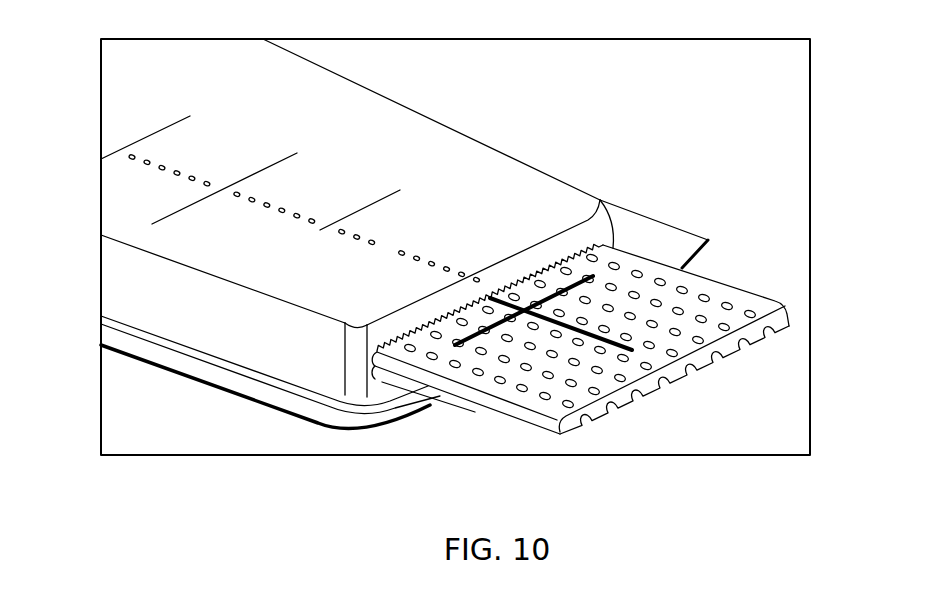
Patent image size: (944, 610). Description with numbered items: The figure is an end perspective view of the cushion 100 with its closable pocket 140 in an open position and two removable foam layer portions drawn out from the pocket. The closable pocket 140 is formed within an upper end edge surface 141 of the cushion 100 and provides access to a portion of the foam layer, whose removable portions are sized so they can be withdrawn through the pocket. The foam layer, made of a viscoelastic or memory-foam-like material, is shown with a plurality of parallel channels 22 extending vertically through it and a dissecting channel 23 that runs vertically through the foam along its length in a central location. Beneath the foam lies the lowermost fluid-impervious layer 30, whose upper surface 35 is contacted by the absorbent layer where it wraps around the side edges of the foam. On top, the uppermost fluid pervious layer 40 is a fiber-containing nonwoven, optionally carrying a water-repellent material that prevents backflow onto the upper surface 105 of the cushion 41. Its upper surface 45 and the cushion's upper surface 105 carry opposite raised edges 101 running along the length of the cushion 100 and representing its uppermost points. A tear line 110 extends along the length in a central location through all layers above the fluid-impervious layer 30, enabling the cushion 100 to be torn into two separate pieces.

The cushion 100 is at (520, 105).
The opposite raised edges 101 is at (512, 183).
The upper surface of the cushion 105 is at (360, 267).
The tear line 110 is at (437, 258).
The cushion 41 is at (190, 308).
The uppermost fluid pervious layer 40 is at (253, 337).
The upper surface of the uppermost fluid pervious layer 45 is at (325, 285).
The upper surface of the lowermost fluid-impervious layer 35 is at (368, 418).
The lowermost fluid-impervious layer 30 is at (668, 240).
The closable pocket 140 is at (608, 243).
The upper end edge surface 141 is at (371, 366).
The parallel channels 22 is at (648, 374).
The dissecting channel 23 is at (622, 354).